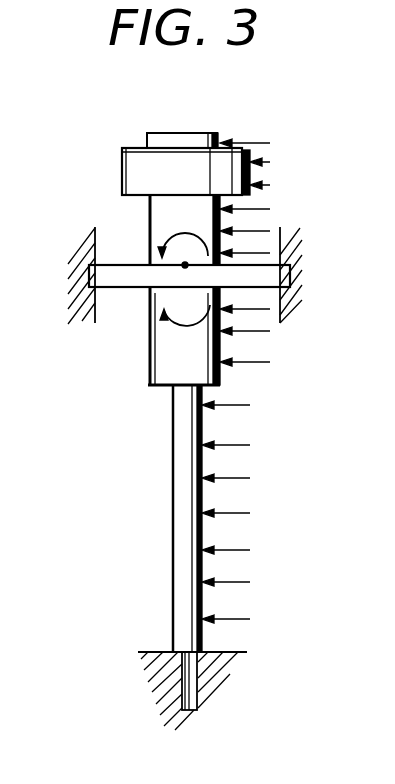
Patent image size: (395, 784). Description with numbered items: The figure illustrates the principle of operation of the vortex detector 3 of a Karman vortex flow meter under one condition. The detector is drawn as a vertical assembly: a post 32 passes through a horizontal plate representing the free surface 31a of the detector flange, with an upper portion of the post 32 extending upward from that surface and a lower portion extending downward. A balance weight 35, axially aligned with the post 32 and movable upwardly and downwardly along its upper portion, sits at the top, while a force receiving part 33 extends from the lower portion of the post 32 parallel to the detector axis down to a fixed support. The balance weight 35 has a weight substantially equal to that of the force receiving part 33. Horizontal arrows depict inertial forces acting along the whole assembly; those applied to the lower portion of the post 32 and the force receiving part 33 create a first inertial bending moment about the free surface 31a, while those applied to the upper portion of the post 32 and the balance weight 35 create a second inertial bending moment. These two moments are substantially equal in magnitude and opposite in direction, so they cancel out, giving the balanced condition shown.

The vortex detector 3 is at (137, 100).
The balance weight 35 is at (122, 150).
The post 32 is at (150, 216).
The free surface 31a is at (130, 268).
The force receiving part 33 is at (182, 502).